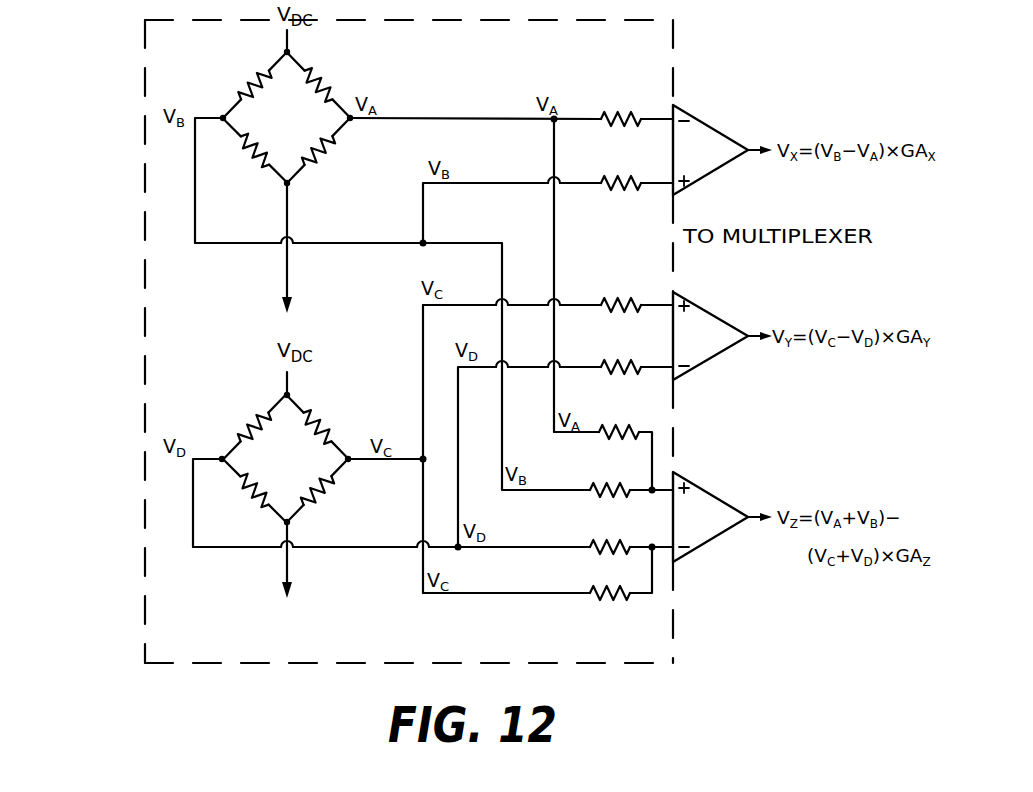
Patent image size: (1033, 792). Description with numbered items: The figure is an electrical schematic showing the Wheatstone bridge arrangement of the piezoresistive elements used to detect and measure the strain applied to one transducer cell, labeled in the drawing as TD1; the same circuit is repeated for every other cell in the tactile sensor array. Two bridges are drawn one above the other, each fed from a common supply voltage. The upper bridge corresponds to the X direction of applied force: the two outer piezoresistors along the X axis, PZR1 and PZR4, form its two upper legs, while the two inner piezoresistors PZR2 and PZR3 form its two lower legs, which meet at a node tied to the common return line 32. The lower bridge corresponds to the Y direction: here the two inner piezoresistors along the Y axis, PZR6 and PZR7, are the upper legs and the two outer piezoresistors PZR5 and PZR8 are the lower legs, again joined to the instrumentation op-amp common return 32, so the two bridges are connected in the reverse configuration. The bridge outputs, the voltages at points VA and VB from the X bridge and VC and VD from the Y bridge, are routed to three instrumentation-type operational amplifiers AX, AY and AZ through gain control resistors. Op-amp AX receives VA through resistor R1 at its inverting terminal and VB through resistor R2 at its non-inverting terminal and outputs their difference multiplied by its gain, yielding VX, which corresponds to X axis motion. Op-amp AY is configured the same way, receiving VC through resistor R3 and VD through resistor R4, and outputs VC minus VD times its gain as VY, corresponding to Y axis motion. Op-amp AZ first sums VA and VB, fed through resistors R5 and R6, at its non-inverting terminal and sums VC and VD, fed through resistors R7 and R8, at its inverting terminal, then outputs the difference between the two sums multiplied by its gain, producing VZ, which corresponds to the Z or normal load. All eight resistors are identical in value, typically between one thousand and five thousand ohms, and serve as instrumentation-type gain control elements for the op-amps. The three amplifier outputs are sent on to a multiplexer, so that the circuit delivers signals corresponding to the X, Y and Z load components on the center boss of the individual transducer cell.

The common return line 32 is at (272, 567).
The transducer TD1 is at (146, 317).
The piezoresistor PZR1 is at (334, 85).
The piezoresistor PZR2 is at (331, 151).
The piezoresistor PZR3 is at (247, 150).
The piezoresistor PZR4 is at (239, 85).
The piezoresistor PZR5 is at (329, 491).
The piezoresistor PZR6 is at (326, 427).
The piezoresistor PZR7 is at (247, 427).
The piezoresistor PZR8 is at (245, 490).
The resistor R1 is at (621, 107).
The resistor R2 is at (621, 170).
The resistor R3 is at (621, 295).
The resistor R4 is at (621, 356).
The resistor R5 is at (619, 420).
The resistor R6 is at (610, 479).
The resistor R7 is at (610, 536).
The resistor R8 is at (610, 582).
The operational amplifier AX is at (722, 150).
The operational amplifier AY is at (722, 336).
The operational amplifier AZ is at (722, 517).